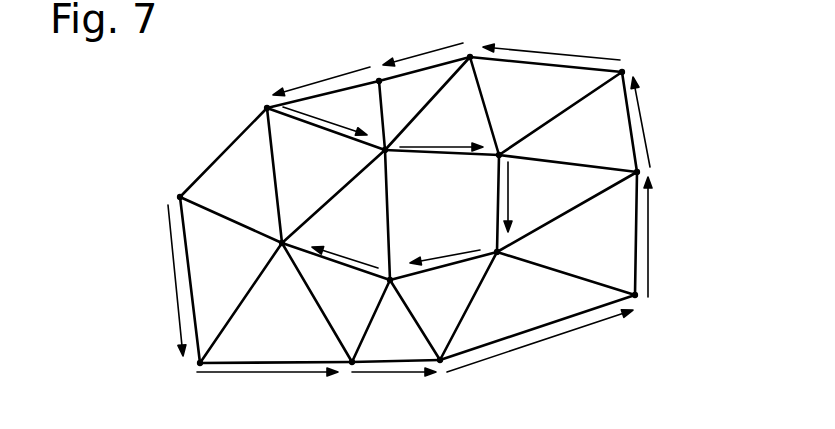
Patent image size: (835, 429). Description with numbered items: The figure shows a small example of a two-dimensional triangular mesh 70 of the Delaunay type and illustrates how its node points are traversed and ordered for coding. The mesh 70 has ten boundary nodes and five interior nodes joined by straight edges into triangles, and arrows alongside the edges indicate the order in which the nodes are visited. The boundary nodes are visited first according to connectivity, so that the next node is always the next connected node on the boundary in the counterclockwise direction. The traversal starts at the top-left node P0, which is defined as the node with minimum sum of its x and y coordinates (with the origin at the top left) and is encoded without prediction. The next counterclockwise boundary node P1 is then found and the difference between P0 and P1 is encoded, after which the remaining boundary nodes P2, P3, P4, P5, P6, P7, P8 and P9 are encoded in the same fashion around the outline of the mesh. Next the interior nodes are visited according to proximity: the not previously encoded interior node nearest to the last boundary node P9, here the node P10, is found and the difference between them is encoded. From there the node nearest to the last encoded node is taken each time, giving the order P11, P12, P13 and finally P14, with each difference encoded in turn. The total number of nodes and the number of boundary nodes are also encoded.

The triangular mesh 70 is at (746, 86).
The top-left node P0 is at (168, 261).
The boundary node P1 is at (263, 384).
The boundary node P2 is at (387, 383).
The boundary node P3 is at (536, 358).
The boundary node P4 is at (654, 257).
The boundary node P5 is at (658, 137).
The boundary node P6 is at (570, 62).
The boundary node P7 is at (433, 37).
The boundary node P8 is at (327, 63).
The boundary node P9 is at (296, 105).
The interior node P10 is at (403, 155).
The interior node P11 is at (513, 166).
The interior node P12 is at (472, 272).
The interior node P13 is at (352, 278).
The interior node P14 is at (256, 247).